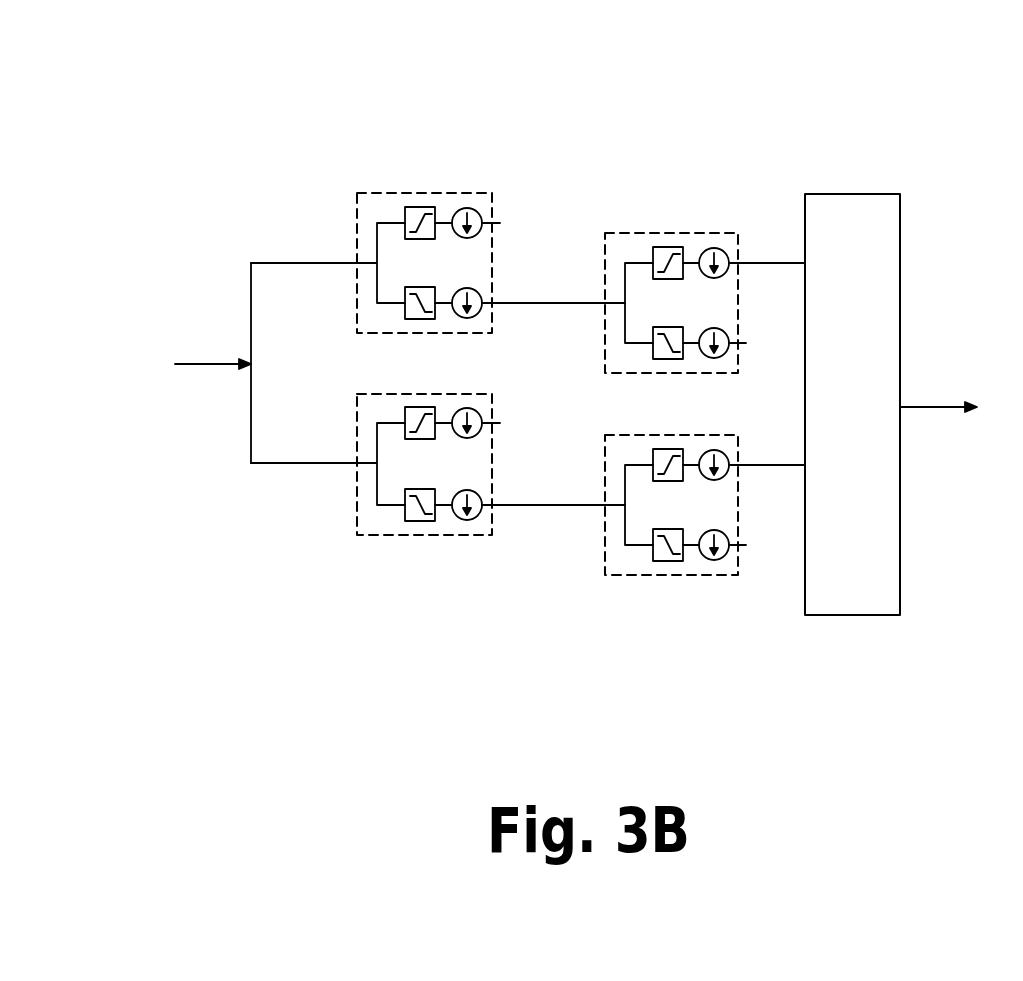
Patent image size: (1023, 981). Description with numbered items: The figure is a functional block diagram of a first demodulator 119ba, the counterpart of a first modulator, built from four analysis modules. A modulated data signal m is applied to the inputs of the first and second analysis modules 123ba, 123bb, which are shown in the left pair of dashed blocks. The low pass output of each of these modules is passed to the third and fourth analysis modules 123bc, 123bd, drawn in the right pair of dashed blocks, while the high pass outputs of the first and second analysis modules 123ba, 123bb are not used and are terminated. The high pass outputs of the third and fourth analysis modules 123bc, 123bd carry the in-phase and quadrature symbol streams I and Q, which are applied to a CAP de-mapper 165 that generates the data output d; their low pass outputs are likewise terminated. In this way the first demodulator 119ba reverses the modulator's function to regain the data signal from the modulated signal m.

The first demodulator 119ba is at (882, 108).
The first analysis module 123ba is at (416, 190).
The second analysis module 123bb is at (424, 538).
The third analysis module 123bc is at (662, 230).
The fourth analysis module 123bd is at (671, 578).
The CAP demapping block 165 is at (903, 249).